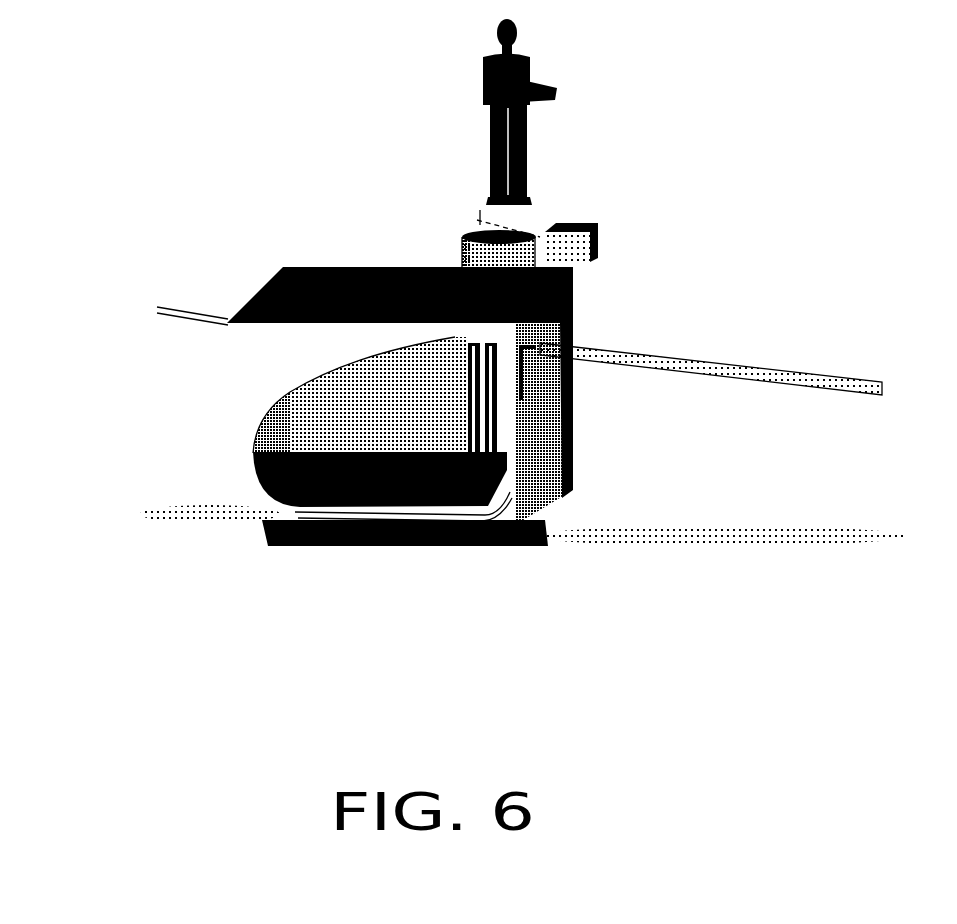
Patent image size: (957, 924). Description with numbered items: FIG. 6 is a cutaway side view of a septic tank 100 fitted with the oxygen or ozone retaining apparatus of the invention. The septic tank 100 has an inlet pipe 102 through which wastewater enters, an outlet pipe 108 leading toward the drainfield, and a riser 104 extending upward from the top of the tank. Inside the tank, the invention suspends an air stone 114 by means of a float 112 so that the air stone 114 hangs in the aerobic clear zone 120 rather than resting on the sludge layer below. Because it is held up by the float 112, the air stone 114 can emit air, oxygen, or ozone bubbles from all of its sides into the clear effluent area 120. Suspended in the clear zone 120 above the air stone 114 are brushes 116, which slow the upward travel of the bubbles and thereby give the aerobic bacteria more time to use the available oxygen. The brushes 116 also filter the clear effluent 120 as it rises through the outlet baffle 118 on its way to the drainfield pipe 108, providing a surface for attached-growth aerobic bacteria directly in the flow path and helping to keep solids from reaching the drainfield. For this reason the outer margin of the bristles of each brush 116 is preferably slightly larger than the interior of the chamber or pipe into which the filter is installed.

The septic tank 100 is at (302, 265).
The inlet pipe 102 is at (157, 307).
The riser 104 is at (530, 232).
The outlet pipe 108 is at (815, 378).
The float 112 is at (497, 338).
The air stone 114 is at (485, 452).
The brushes 116 is at (493, 400).
The outlet baffle 118 is at (517, 381).
The aerobic clear zone 120 is at (405, 431).